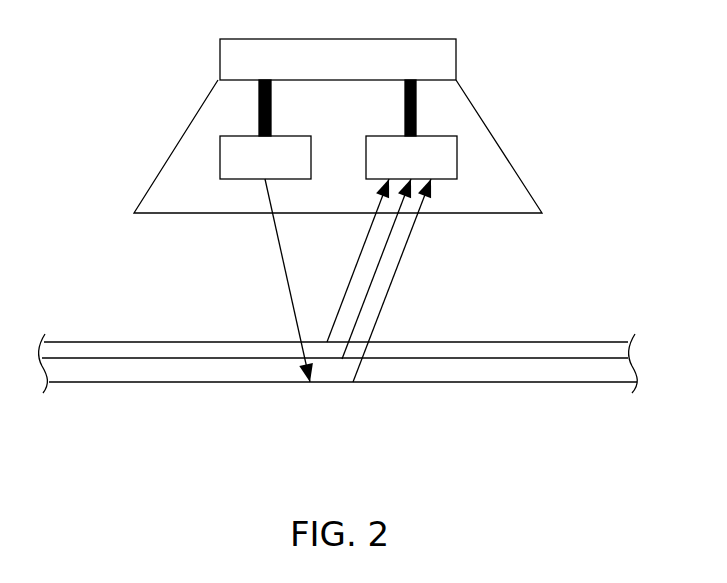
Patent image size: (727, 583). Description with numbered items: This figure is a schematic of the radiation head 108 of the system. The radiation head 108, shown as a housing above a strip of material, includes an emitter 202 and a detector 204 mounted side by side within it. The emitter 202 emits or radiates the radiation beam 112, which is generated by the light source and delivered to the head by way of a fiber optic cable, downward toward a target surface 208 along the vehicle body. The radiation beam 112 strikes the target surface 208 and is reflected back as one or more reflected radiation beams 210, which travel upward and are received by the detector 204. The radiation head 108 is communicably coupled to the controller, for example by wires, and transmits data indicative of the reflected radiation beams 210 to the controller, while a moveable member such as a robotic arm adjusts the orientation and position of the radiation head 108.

The radiation head 108 is at (525, 175).
The emitter 202 is at (228, 132).
The detector 204 is at (446, 130).
The radiation beam 112 is at (278, 267).
The reflected radiation beams 210 is at (413, 263).
The target surface 208 is at (560, 341).